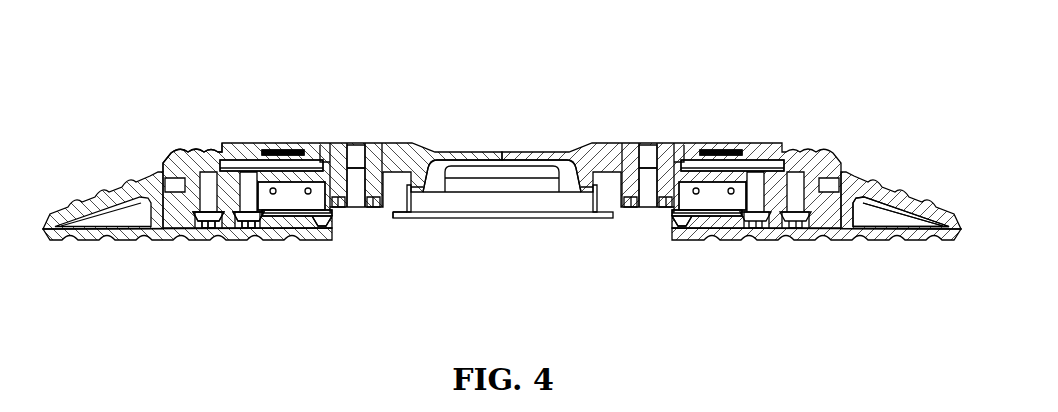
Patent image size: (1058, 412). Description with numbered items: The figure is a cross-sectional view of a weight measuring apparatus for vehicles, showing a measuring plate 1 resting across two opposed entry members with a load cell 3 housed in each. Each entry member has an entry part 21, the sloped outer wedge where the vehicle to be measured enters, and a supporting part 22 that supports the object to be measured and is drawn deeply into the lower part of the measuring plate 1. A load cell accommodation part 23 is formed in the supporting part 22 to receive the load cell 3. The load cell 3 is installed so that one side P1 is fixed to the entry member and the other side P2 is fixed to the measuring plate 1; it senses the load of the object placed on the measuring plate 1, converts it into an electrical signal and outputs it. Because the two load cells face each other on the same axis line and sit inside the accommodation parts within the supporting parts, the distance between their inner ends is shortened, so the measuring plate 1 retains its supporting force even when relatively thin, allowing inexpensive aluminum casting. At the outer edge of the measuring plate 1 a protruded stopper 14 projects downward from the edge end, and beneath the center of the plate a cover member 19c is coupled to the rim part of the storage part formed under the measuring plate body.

The measuring plate 1 is at (254, 135).
The load cell 3 is at (721, 152).
The protruded stopper 14 is at (176, 148).
The cover member 19c is at (505, 218).
The entry part 21 is at (895, 238).
The supporting part 22 is at (698, 238).
The load cell accommodation part 23 is at (728, 238).
The one side of the load cell P1 is at (197, 232).
The other side of the load cell P2 is at (400, 232).